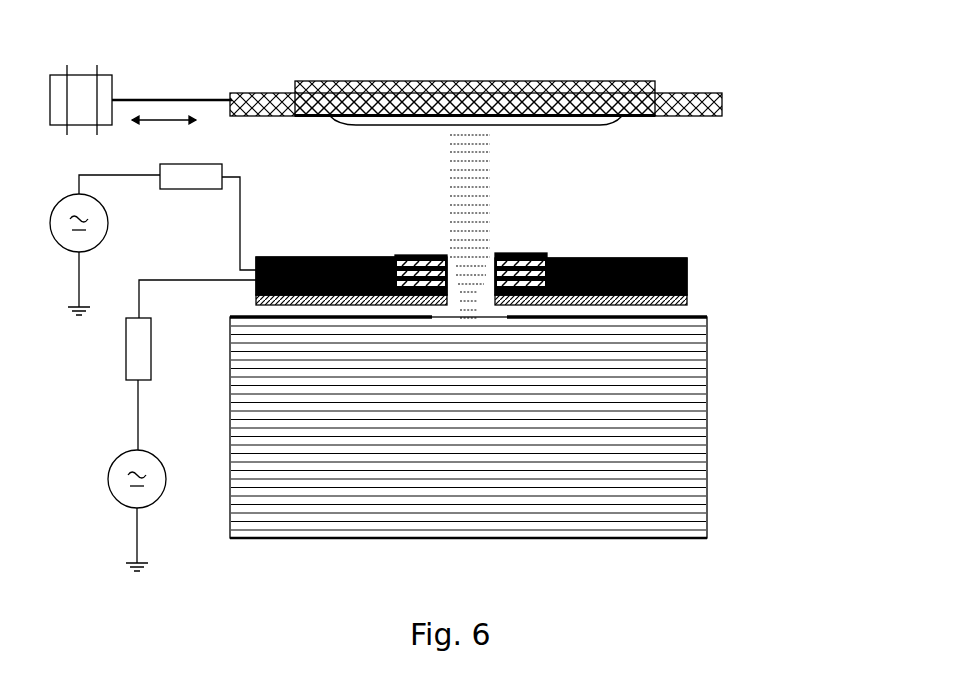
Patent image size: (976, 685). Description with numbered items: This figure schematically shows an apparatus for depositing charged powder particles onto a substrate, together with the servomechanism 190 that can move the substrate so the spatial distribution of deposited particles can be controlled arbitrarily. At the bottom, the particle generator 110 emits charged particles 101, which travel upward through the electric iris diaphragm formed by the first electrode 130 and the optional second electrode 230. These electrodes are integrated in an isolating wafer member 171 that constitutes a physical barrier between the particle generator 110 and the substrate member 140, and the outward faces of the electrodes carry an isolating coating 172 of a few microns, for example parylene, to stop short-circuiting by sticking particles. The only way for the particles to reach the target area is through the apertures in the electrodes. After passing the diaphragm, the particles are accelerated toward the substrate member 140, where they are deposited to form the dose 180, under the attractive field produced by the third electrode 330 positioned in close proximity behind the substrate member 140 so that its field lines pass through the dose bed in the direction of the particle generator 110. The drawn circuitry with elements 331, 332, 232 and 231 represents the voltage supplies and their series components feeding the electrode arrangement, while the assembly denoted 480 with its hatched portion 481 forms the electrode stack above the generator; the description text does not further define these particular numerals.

The servomechanism 190 is at (77, 72).
The third electrode 330 is at (553, 88).
The substrate member 140 is at (520, 114).
The dose 180 is at (367, 123).
The electrode assembly 480 is at (577, 258).
The emitter region 481 is at (550, 258).
The second electrode 230 is at (527, 257).
The isolating coating 172 is at (670, 258).
The isolating wafer member 171 is at (687, 283).
The first electrode 130 is at (687, 302).
The charged particles 101 is at (690, 363).
The particle generator 110 is at (707, 442).
The AC power source 331 is at (58, 197).
The resistor 332 is at (185, 190).
The resistor 232 is at (125, 342).
The AC power source 231 is at (115, 460).